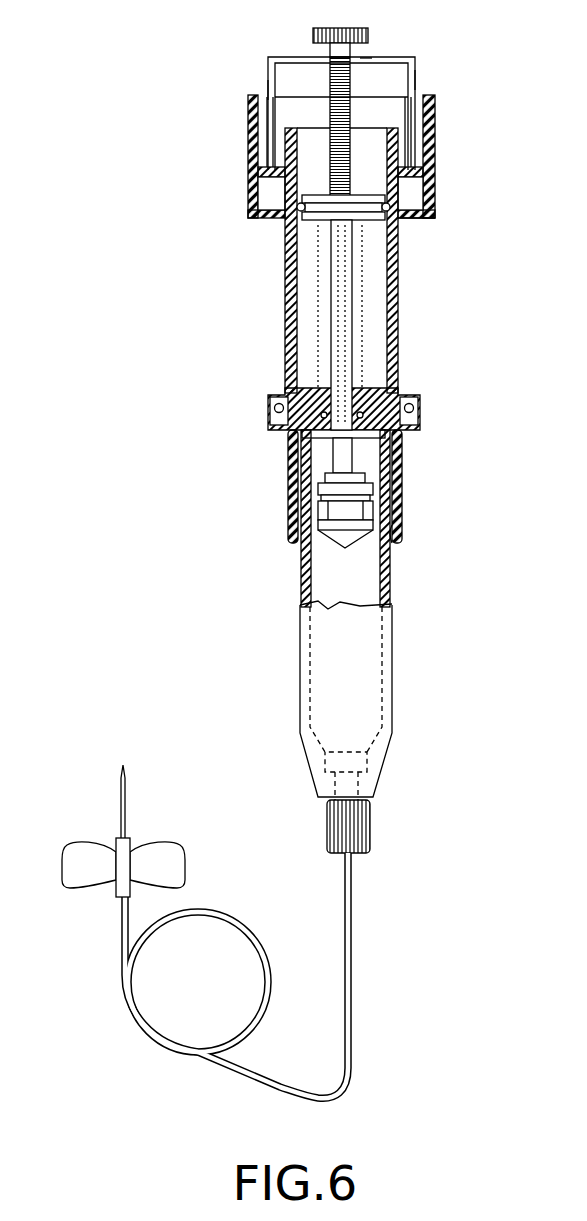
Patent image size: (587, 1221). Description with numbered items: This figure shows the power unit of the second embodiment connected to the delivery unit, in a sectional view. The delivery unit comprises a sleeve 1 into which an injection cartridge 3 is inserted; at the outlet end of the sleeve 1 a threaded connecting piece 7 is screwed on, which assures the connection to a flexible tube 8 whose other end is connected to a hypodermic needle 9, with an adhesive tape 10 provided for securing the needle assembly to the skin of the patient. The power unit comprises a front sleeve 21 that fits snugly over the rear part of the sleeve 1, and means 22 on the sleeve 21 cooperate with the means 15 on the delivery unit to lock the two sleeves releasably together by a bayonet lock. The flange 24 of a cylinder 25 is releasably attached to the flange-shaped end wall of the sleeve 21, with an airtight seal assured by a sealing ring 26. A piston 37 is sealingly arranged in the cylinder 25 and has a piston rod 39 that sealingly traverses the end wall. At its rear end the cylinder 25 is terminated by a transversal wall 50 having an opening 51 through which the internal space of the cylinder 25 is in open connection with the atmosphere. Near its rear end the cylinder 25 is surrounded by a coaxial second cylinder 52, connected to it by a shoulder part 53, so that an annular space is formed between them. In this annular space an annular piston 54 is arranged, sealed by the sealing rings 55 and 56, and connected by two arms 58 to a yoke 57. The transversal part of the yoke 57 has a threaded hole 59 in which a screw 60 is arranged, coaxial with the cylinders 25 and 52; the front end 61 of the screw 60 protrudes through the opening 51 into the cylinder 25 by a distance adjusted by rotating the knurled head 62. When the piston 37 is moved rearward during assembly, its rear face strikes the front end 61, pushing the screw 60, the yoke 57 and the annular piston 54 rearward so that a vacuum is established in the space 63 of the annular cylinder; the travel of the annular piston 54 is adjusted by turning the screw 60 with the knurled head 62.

The sleeve 1 is at (297, 676).
The injection cartridge 3 is at (380, 578).
The connecting piece 7 is at (370, 820).
The flexible tube 8 is at (352, 985).
The hypodermic needle 9 is at (125, 812).
The adhesive tape 10 is at (185, 881).
The locking means 15 is at (290, 530).
The sleeve 21 is at (402, 480).
The connecting means 22 is at (402, 530).
The flange 24 is at (412, 395).
The cylinder 25 is at (288, 308).
The sealing ring 26 is at (275, 410).
The piston 37 is at (353, 225).
The piston rod 39 is at (347, 312).
The transversal wall 50 is at (364, 130).
The opening 51 is at (330, 130).
The second cylinder 52 is at (435, 115).
The shoulder part 53 is at (410, 220).
The annular piston 54 is at (262, 190).
The sealing ring 55 is at (420, 162).
The sealing ring 56 is at (262, 160).
The yoke 57 is at (282, 58).
The arms 58 is at (268, 90).
The threaded hole 59 is at (372, 52).
The screw 60 is at (335, 58).
The front end 61 is at (347, 202).
The knurled head 62 is at (343, 28).
The space 63 is at (415, 195).